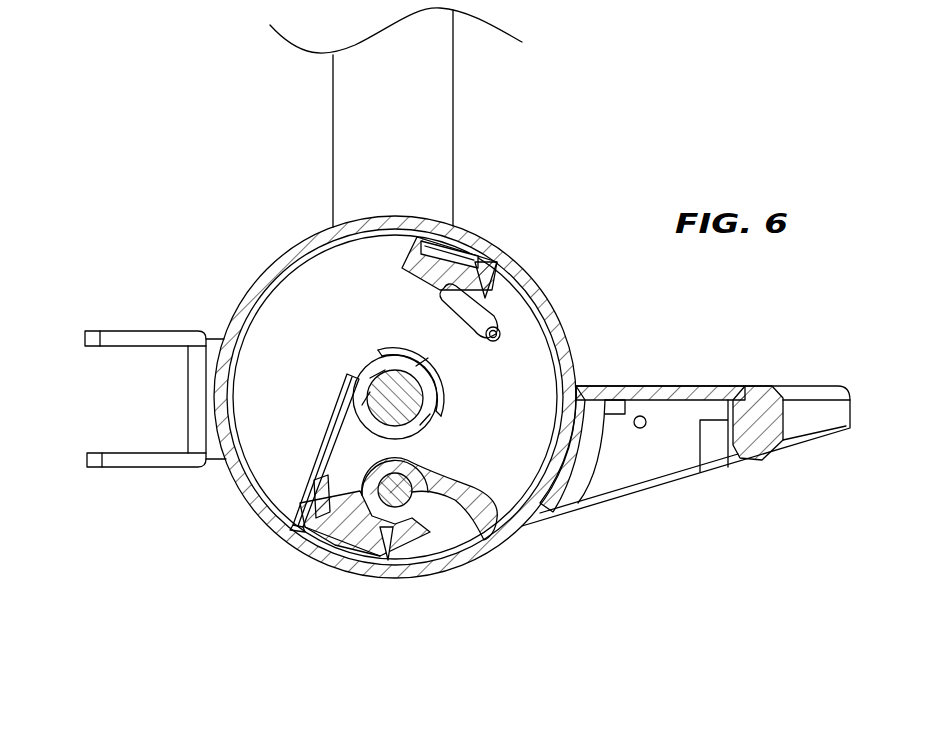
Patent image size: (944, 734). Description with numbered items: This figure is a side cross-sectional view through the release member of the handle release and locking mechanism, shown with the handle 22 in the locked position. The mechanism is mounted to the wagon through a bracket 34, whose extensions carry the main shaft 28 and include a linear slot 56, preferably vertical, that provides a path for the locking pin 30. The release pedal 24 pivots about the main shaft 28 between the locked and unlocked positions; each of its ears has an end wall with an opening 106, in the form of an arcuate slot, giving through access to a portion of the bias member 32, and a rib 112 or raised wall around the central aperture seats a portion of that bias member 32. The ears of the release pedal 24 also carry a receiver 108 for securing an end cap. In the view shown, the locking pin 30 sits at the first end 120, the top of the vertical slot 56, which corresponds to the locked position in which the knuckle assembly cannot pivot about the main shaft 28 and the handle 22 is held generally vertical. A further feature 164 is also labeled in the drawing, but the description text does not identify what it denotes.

The handle 22 is at (422, 114).
The release pedal 24 is at (750, 386).
The main shaft 28 is at (387, 388).
The locking pin 30 is at (383, 497).
The bias member 32 is at (500, 333).
The bracket 34 is at (122, 330).
The linear slot 56 is at (410, 507).
The opening 106 is at (489, 320).
The receiver 108 is at (462, 232).
The rib 112 is at (436, 425).
The first end 120 is at (397, 507).
The hook 164 is at (467, 513).